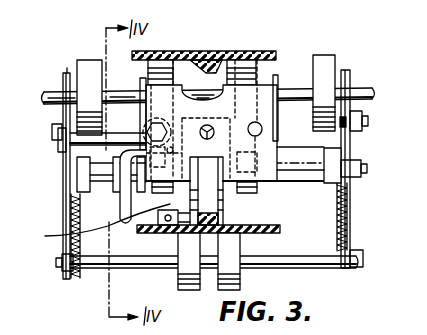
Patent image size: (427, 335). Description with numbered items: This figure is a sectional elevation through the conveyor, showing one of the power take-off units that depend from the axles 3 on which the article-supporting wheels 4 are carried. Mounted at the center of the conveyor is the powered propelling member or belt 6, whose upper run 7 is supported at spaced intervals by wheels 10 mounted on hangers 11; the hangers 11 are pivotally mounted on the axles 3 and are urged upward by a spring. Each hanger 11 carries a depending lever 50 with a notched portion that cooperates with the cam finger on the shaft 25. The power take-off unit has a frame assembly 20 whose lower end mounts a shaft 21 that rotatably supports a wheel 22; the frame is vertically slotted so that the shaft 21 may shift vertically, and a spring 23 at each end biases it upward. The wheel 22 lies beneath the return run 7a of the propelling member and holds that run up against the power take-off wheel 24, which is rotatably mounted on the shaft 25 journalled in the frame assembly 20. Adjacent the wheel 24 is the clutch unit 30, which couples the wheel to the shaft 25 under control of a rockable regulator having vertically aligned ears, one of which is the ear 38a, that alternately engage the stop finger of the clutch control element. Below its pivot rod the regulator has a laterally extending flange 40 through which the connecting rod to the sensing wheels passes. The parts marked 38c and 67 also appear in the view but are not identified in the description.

The axle 3 is at (360, 90).
The wheel 4 is at (323, 60).
The propelling member 6 is at (253, 240).
The upper run 7 is at (214, 56).
The return run 7a is at (270, 225).
The wheel 10 is at (250, 70).
The hanger 11 is at (268, 151).
The frame assembly 20 is at (351, 146).
The shaft 21 is at (303, 252).
The wheel 22 is at (241, 280).
The spring 23 is at (72, 209).
The power take-off wheel 24 is at (236, 209).
The shaft 25 is at (364, 170).
The clutch unit 30 is at (147, 193).
The ear 38a is at (145, 118).
The lever arm 38c is at (124, 225).
The flange 40 is at (163, 232).
The lever 50 is at (94, 224).
The clip 67 is at (264, 48).